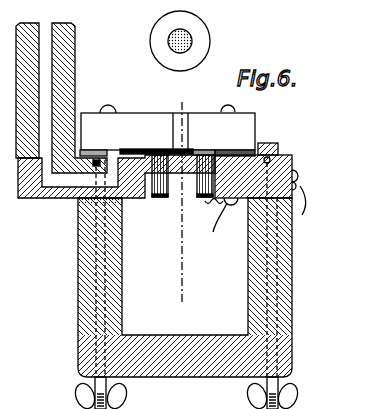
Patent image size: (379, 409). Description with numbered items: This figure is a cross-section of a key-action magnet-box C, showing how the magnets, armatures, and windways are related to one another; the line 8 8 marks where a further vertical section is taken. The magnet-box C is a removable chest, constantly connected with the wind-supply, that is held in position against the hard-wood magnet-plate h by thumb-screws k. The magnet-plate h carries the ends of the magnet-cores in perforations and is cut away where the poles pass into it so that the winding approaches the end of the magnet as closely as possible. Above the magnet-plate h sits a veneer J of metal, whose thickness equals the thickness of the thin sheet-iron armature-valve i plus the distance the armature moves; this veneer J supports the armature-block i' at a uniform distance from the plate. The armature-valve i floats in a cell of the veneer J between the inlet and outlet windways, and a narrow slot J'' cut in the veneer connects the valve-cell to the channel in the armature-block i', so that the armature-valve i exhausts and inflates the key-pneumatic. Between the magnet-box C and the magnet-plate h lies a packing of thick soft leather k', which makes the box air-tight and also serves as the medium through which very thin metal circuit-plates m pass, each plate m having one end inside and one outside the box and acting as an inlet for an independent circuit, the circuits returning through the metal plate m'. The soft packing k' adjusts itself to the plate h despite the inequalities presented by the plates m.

The armature-block i' is at (168, 122).
The armature-valve i is at (188, 83).
The slot J'' is at (105, 143).
The veneer J is at (246, 140).
The magnet-plate h is at (294, 159).
The circuit-plate m is at (308, 192).
The return plate m' is at (181, 215).
The leather packing k' is at (189, 221).
The clamping bolts k'' is at (182, 176).
The thumb-screw k is at (193, 284).
The magnet-box C is at (290, 277).
The section line 8 is at (183, 203).